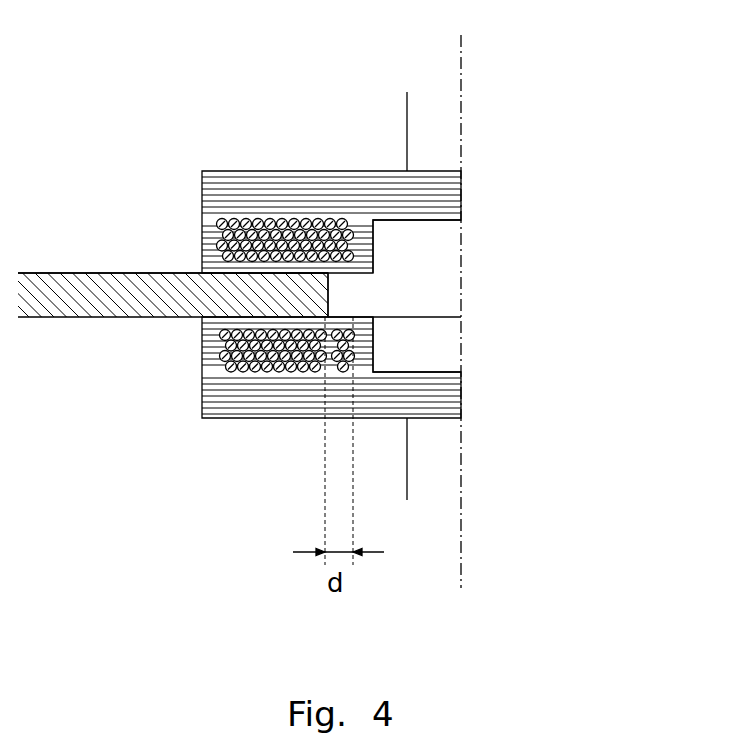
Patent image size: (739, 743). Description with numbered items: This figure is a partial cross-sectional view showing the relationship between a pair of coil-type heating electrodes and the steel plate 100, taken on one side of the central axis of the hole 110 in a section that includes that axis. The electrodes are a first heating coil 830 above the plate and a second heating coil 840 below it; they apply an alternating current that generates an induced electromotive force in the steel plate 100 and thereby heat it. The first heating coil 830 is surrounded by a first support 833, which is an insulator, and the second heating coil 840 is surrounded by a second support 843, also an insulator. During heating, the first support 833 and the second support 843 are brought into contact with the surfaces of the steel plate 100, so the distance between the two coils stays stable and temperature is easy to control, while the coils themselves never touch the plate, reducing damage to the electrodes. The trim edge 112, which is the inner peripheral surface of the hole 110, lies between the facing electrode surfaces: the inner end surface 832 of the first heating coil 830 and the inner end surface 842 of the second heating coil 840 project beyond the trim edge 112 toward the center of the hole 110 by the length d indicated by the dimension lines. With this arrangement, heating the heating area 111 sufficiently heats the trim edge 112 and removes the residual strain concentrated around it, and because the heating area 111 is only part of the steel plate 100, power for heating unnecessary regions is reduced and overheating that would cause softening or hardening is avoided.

The steel plate 100 is at (88, 275).
The heating area 111 is at (240, 278).
The trim edge 112 is at (328, 298).
The hole 110 is at (446, 328).
The first heating coil 830 is at (297, 232).
The inner end surface of the first heating coil 832 is at (350, 233).
The first support 833 is at (215, 190).
The second heating coil 840 is at (287, 372).
The inner end surface of the second heating coil 842 is at (353, 349).
The second support 843 is at (218, 407).